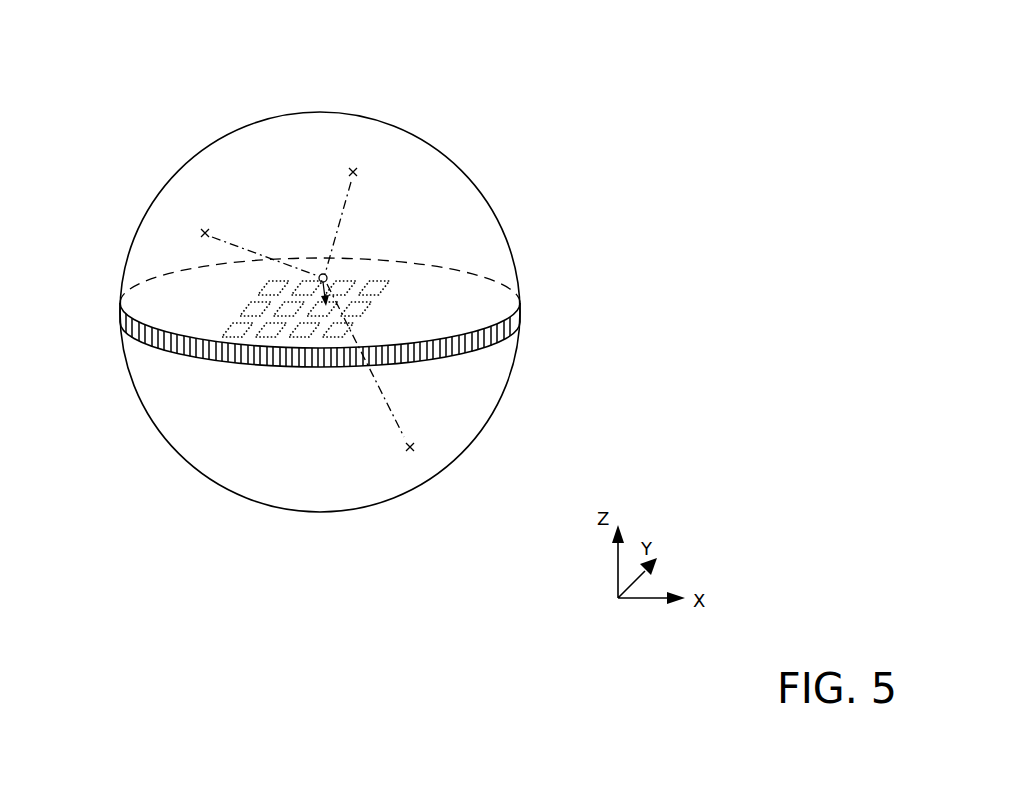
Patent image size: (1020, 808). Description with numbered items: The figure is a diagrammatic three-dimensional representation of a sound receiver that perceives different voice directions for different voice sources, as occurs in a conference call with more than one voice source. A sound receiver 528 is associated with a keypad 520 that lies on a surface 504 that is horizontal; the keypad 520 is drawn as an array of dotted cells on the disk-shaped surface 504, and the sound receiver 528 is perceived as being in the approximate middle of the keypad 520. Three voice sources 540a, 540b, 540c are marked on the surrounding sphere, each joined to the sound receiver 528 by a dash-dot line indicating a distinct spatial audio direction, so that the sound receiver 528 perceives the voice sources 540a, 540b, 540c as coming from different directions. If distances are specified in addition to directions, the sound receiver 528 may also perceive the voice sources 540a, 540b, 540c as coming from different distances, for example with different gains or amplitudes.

The surface 504 is at (478, 352).
The keypad 520 is at (198, 329).
The sound receiver 528 is at (342, 293).
The voice source 540a is at (354, 170).
The voice source 540b is at (204, 231).
The voice source 540c is at (411, 450).